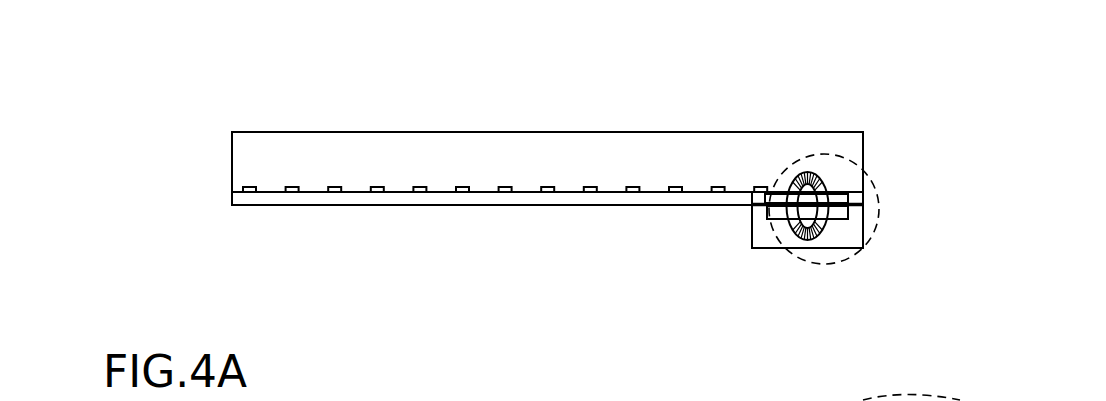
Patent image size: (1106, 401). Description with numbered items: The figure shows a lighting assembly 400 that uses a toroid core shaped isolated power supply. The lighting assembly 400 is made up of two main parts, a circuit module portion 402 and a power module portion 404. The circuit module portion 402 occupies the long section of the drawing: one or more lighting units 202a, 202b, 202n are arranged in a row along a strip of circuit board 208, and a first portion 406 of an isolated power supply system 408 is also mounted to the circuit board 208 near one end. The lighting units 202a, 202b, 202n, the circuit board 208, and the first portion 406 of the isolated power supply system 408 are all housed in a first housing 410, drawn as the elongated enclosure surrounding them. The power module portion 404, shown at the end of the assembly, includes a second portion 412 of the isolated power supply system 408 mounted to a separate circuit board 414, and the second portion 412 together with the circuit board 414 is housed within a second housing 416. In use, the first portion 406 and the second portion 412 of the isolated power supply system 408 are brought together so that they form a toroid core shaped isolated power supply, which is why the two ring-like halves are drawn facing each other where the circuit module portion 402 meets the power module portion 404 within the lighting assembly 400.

The lighting assembly 400 is at (938, 127).
The circuit module portion 402 is at (892, 160).
The power module portion 404 is at (893, 226).
The first portion of the isolated power supply system 406 is at (807, 160).
The isolated power supply system 408 is at (842, 160).
The first housing 410 is at (233, 132).
The second portion of the isolated power supply system 412 is at (797, 252).
The circuit board 414 is at (845, 219).
The second housing 416 is at (864, 222).
The circuit board 208 is at (458, 199).
The lighting unit 202a is at (245, 193).
The lighting unit 202b is at (293, 193).
The lighting unit 202n is at (756, 193).